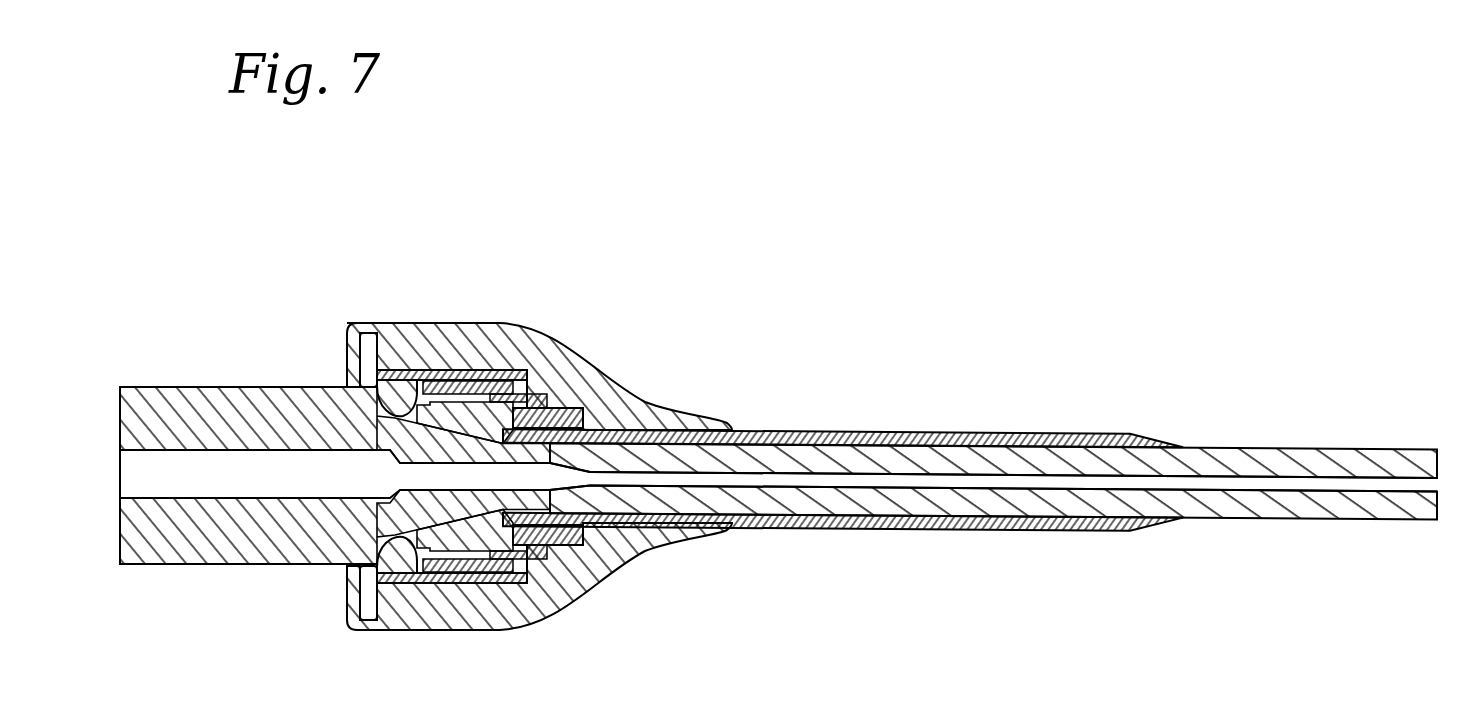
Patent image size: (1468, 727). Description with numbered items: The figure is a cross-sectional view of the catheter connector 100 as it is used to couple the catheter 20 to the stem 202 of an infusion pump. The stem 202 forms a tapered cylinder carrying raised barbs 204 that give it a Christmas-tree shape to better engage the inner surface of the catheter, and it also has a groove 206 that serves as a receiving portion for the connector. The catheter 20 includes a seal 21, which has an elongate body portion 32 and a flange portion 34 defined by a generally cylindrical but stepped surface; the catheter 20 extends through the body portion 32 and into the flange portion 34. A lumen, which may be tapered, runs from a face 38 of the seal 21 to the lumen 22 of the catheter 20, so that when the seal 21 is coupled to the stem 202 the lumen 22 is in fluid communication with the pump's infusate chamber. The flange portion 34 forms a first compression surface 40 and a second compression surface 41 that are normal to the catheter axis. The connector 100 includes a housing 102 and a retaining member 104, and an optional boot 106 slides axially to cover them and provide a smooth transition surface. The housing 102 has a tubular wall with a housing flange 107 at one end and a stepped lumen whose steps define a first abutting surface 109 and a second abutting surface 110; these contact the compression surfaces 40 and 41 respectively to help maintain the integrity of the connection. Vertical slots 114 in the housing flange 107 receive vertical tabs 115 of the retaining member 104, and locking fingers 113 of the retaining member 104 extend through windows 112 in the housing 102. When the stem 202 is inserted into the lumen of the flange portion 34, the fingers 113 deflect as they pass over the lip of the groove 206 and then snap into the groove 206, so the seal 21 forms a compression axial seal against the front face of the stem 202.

The catheter connector 100 is at (580, 262).
The catheter 20 is at (1243, 450).
The seal 21 is at (882, 430).
The lumen 22 is at (1266, 482).
The elongate body portion 32 is at (815, 528).
The flange portion 34 is at (488, 390).
The face 38 is at (333, 445).
The first compression surface 40 is at (527, 372).
The second compression surface 41 is at (520, 410).
The housing 102 is at (513, 622).
The retaining member 104 is at (421, 378).
The boot 106 is at (418, 368).
The housing flange 107 is at (410, 322).
The first abutting surface 109 is at (455, 590).
The second abutting surface 110 is at (492, 610).
The window 112 is at (407, 600).
The locking finger 113 is at (405, 430).
The vertical slot 114 is at (345, 367).
The vertical tab 115 is at (367, 357).
The stem 202 is at (182, 387).
The barb 204 is at (572, 560).
The groove 206 is at (402, 565).